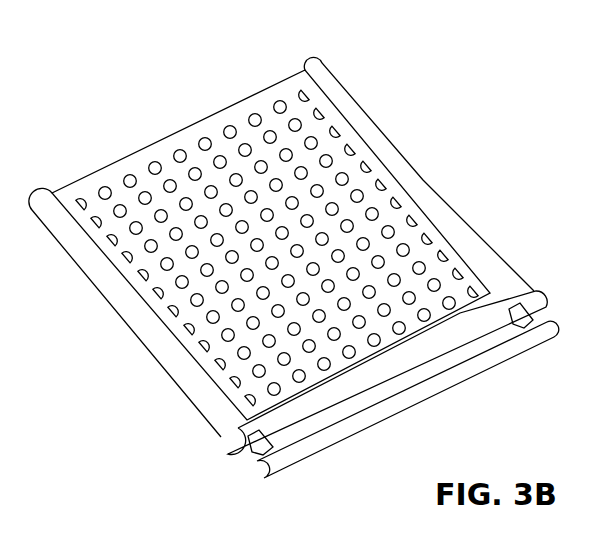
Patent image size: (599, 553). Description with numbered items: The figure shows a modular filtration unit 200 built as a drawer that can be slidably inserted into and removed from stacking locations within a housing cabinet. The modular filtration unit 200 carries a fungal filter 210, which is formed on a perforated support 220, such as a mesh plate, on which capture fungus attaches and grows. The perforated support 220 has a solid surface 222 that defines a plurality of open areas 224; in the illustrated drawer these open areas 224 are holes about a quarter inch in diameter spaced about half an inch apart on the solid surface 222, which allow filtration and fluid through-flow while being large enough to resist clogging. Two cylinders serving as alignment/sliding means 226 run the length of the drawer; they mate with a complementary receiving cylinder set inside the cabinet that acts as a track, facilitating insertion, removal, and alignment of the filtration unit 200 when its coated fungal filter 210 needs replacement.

The modular filtration unit 200 is at (294, 251).
The fungal filter 210 is at (294, 266).
The perforated support 220 is at (271, 237).
The solid surface 222 is at (242, 118).
The open area 224 is at (194, 170).
The alignment/sliding means 226 is at (133, 312).